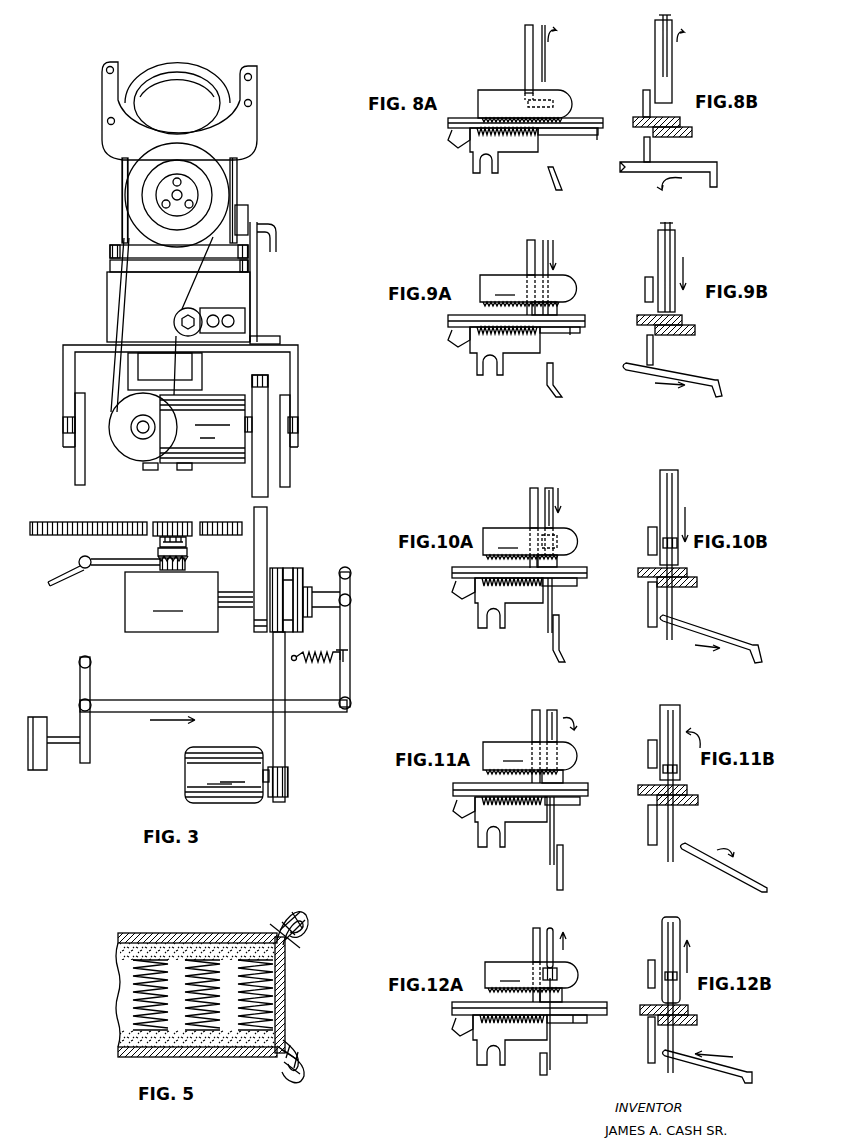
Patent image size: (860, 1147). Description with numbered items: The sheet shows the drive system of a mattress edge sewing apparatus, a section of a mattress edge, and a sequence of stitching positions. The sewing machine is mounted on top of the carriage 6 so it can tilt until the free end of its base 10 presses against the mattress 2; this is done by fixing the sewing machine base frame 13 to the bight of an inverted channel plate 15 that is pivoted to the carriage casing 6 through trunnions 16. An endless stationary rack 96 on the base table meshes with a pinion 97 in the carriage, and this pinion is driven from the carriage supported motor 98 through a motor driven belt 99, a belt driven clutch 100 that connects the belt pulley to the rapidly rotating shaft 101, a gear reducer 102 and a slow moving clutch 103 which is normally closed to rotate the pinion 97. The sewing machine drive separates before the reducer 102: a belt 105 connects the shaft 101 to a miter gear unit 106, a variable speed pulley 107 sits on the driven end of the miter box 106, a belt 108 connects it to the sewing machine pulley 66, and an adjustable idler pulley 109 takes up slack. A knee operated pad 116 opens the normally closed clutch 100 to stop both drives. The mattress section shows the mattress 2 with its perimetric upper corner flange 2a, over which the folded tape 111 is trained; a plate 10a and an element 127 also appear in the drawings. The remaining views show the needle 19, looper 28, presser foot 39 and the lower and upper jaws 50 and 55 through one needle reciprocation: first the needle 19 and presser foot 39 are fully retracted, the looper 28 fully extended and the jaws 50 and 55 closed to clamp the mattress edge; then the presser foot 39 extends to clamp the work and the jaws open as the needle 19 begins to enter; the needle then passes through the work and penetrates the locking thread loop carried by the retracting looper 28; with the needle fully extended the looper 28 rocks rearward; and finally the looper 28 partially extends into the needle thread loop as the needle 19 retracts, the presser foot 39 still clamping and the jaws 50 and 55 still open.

In FIG. 3, the base 10 is at (237, 172).
In FIG. 3, the sewing machine pulley 66 is at (227, 195).
In FIG. 3, the belt 108 is at (125, 293).
In FIG. 3, the adjustable idler pulley 109 is at (197, 302).
In FIG. 3, the sewing machine base frame 13 is at (242, 296).
In FIG. 3, the channel plate 15 is at (293, 345).
In FIG. 3, the trunnions 16 is at (66, 427).
In FIG. 3, the carriage 6 is at (77, 466).
In FIG. 3, the miter gear unit 106 is at (213, 403).
In FIG. 3, the plate 127 is at (280, 366).
In FIG. 3, the variable speed pulley 107 is at (131, 447).
In FIG. 3, the pinion 97 is at (173, 522).
In FIG. 3, the endless stationary rack 96 is at (68, 536).
In FIG. 3, the clutch 103 is at (187, 553).
In FIG. 3, the belt 105 is at (262, 535).
In FIG. 3, the belt driven clutch 100 is at (296, 572).
In FIG. 3, the gear reducer 102 is at (171, 602).
In FIG. 3, the shaft 101 is at (238, 610).
In FIG. 3, the pad 116 is at (40, 695).
In FIG. 3, the motor driven belt 99 is at (280, 727).
In FIG. 3, the motor 98 is at (236, 775).
In FIG. 5, the mattress 2 is at (197, 935).
In FIG. 5, the tape 111 is at (282, 908).
In FIG. 5, the perimetric upper corner flange 2a is at (303, 920).
In FIG. 8A, the presser foot 39 is at (527, 43).
In FIG. 8B, the presser foot 39 is at (657, 42).
In FIG. 9A, the presser foot 39 is at (527, 263).
In FIG. 9B, the presser foot 39 is at (660, 243).
In FIG. 10A, the presser foot 39 is at (530, 492).
In FIG. 10B, the presser foot 39 is at (660, 487).
In FIG. 11A, the presser foot 39 is at (532, 718).
In FIG. 11B, the presser foot 39 is at (665, 712).
In FIG. 12A, the presser foot 39 is at (533, 935).
In FIG. 12B, the presser foot 39 is at (662, 932).
In FIG. 8A, the needle 19 is at (546, 56).
In FIG. 8B, the needle 19 is at (667, 63).
In FIG. 9A, the needle 19 is at (550, 310).
In FIG. 9B, the needle 19 is at (672, 298).
In FIG. 10A, the needle 19 is at (548, 620).
In FIG. 10B, the needle 19 is at (668, 633).
In FIG. 11A, the needle 19 is at (550, 840).
In FIG. 11B, the needle 19 is at (670, 847).
In FIG. 12A, the needle 19 is at (553, 1057).
In FIG. 12B, the needle 19 is at (675, 1067).
In FIG. 8A, the upper jaw 55 is at (572, 104).
In FIG. 8B, the upper jaw 55 is at (643, 100).
In FIG. 9A, the upper jaw 55 is at (528, 295).
In FIG. 9B, the upper jaw 55 is at (645, 283).
In FIG. 10A, the upper jaw 55 is at (530, 547).
In FIG. 10B, the upper jaw 55 is at (648, 533).
In FIG. 11A, the upper jaw 55 is at (530, 762).
In FIG. 11B, the upper jaw 55 is at (648, 750).
In FIG. 12A, the upper jaw 55 is at (531, 982).
In FIG. 12B, the upper jaw 55 is at (647, 970).
In FIG. 8A, the lower jaw 50 is at (478, 147).
In FIG. 8B, the lower jaw 50 is at (645, 142).
In FIG. 9A, the lower jaw 50 is at (482, 348).
In FIG. 9B, the lower jaw 50 is at (647, 336).
In FIG. 10A, the lower jaw 50 is at (487, 597).
In FIG. 10B, the lower jaw 50 is at (650, 593).
In FIG. 11A, the lower jaw 50 is at (482, 812).
In FIG. 11B, the lower jaw 50 is at (650, 810).
In FIG. 12A, the lower jaw 50 is at (480, 1033).
In FIG. 12B, the lower jaw 50 is at (650, 1025).
In FIG. 8A, the plate 10a is at (593, 137).
In FIG. 8B, the plate 10a is at (693, 132).
In FIG. 9A, the plate 10a is at (570, 333).
In FIG. 9B, the plate 10a is at (695, 330).
In FIG. 10A, the plate 10a is at (575, 585).
In FIG. 10B, the plate 10a is at (697, 585).
In FIG. 11A, the plate 10a is at (582, 802).
In FIG. 11B, the plate 10a is at (698, 803).
In FIG. 12A, the plate 10a is at (587, 1018).
In FIG. 12B, the plate 10a is at (698, 1018).
In FIG. 8A, the looper 28 is at (547, 173).
In FIG. 8B, the looper 28 is at (648, 172).
In FIG. 9A, the looper 28 is at (547, 367).
In FIG. 9B, the looper 28 is at (640, 374).
In FIG. 10A, the looper 28 is at (563, 617).
In FIG. 10B, the looper 28 is at (688, 627).
In FIG. 11A, the looper 28 is at (564, 848).
In FIG. 11B, the looper 28 is at (707, 855).
In FIG. 12A, the looper 28 is at (540, 1062).
In FIG. 12B, the looper 28 is at (665, 1057).